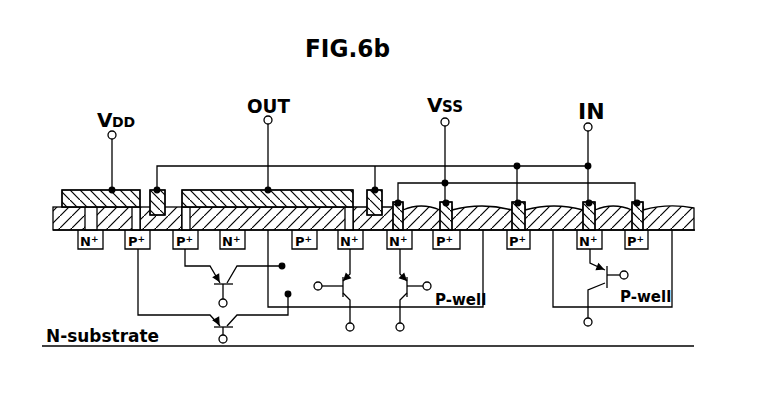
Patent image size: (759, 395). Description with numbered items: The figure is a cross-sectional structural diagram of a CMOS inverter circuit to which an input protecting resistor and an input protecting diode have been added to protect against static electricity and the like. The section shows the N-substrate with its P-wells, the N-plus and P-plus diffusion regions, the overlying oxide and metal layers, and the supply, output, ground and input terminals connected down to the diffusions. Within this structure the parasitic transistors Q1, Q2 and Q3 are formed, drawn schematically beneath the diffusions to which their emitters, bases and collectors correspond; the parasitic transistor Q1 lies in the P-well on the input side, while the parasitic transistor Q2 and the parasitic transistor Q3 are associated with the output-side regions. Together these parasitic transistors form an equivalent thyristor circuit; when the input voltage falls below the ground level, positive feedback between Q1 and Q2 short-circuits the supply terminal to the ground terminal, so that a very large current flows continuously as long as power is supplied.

The parasitic transistor Q1 is at (593, 287).
The parasitic transistor Q2 is at (214, 296).
The parasitic transistor Q3 is at (372, 293).